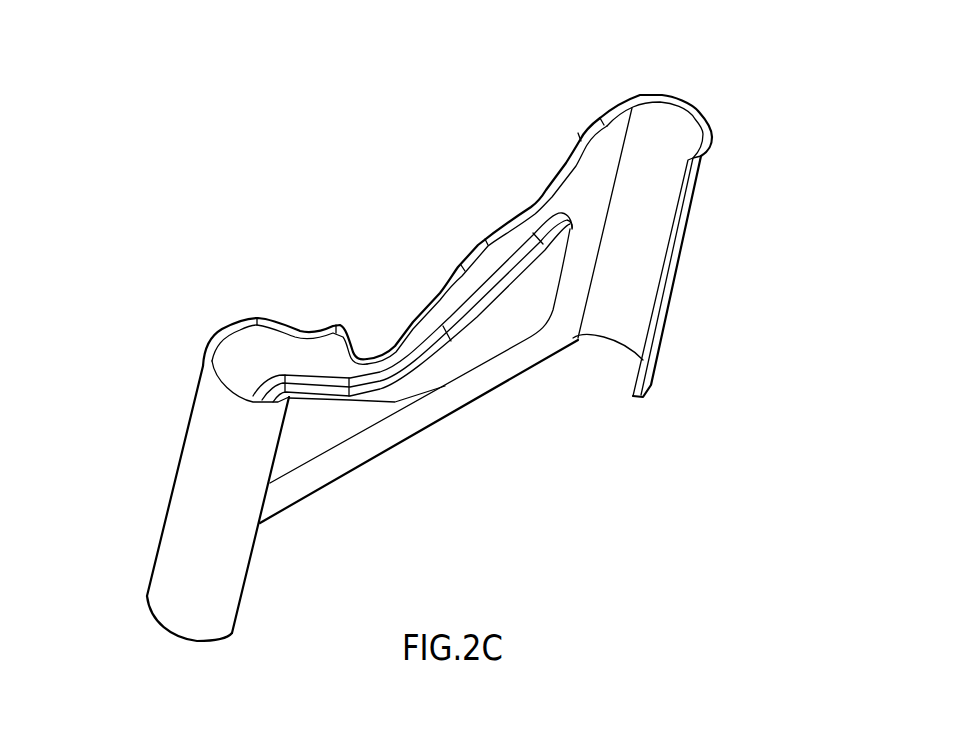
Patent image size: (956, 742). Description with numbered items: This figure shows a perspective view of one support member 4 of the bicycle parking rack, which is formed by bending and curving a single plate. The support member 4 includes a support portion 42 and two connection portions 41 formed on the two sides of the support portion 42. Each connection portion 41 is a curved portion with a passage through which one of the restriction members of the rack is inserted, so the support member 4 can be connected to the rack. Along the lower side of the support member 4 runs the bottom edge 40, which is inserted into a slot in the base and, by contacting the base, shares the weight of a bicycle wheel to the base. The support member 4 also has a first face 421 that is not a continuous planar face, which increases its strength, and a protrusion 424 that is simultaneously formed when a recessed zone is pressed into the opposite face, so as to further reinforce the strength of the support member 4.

The support member 4 is at (206, 291).
The bottom edge 40 is at (380, 457).
The connection portion 41 is at (680, 103).
The support portion 42 is at (572, 176).
The first face 421 is at (498, 375).
The protrusion 424 is at (513, 303).